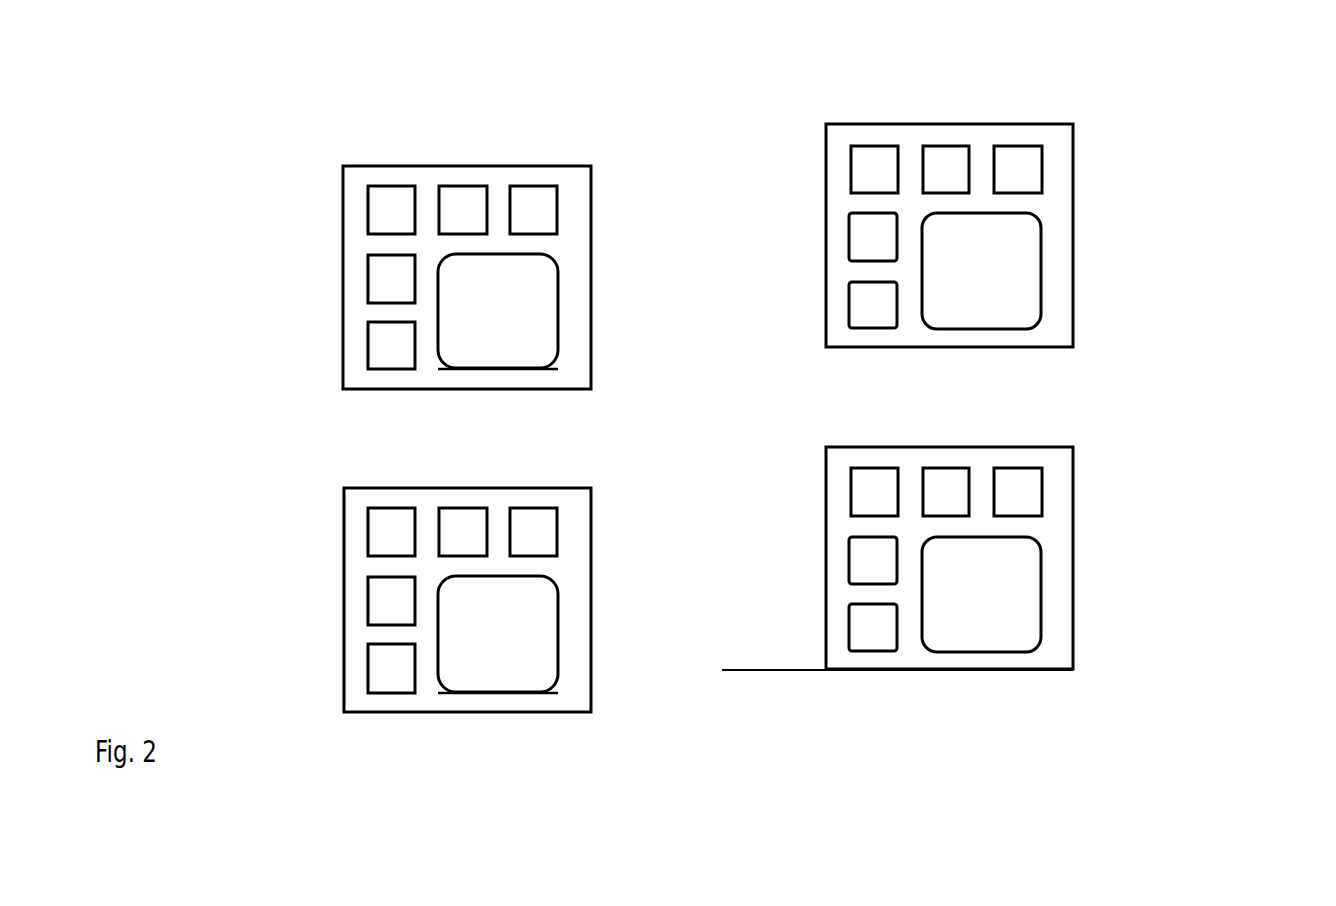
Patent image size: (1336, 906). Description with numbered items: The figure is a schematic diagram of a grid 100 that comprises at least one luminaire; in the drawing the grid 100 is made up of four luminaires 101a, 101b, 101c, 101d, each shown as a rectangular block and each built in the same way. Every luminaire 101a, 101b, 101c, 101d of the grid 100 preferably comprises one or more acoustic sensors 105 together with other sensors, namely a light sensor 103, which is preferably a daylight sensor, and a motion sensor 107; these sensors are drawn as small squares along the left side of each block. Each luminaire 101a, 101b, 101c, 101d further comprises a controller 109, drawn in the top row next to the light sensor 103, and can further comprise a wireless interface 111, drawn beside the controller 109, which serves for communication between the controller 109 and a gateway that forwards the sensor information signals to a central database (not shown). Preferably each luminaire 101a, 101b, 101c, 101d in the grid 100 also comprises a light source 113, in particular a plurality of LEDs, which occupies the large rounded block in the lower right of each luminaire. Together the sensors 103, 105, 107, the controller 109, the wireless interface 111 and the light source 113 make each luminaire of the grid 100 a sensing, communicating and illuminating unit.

The grid 100 is at (1188, 627).
The luminaire 101a is at (591, 186).
The luminaire 101b is at (1073, 146).
The luminaire 101c is at (591, 508).
The luminaire 101d is at (1074, 468).
The light sensor 103 is at (366, 209).
The acoustic sensor 105 is at (366, 277).
The motion sensor 107 is at (366, 344).
The controller 109 is at (463, 187).
The wireless interface 111 is at (535, 187).
The light source 113 is at (522, 326).